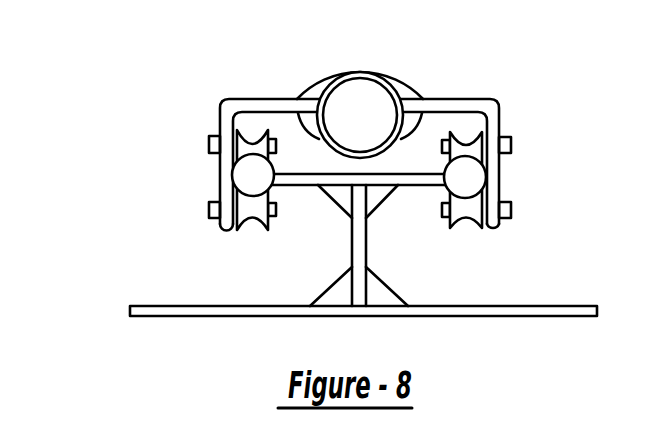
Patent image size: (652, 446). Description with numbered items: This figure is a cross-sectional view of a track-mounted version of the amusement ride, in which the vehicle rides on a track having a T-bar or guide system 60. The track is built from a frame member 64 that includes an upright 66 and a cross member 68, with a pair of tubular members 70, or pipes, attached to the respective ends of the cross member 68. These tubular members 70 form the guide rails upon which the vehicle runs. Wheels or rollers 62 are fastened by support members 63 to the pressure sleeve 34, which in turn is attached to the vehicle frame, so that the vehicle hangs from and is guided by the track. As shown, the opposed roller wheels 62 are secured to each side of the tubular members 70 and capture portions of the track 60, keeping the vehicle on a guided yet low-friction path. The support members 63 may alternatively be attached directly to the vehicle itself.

The T-bar or guide system 60 is at (288, 263).
The wheels or rollers 62 is at (463, 222).
The support members 63 is at (496, 107).
The frame member 64 is at (383, 316).
The upright 66 is at (363, 252).
The cross member 68 is at (318, 183).
The tubular members 70 is at (252, 175).
The pressure sleeve 34 is at (397, 77).